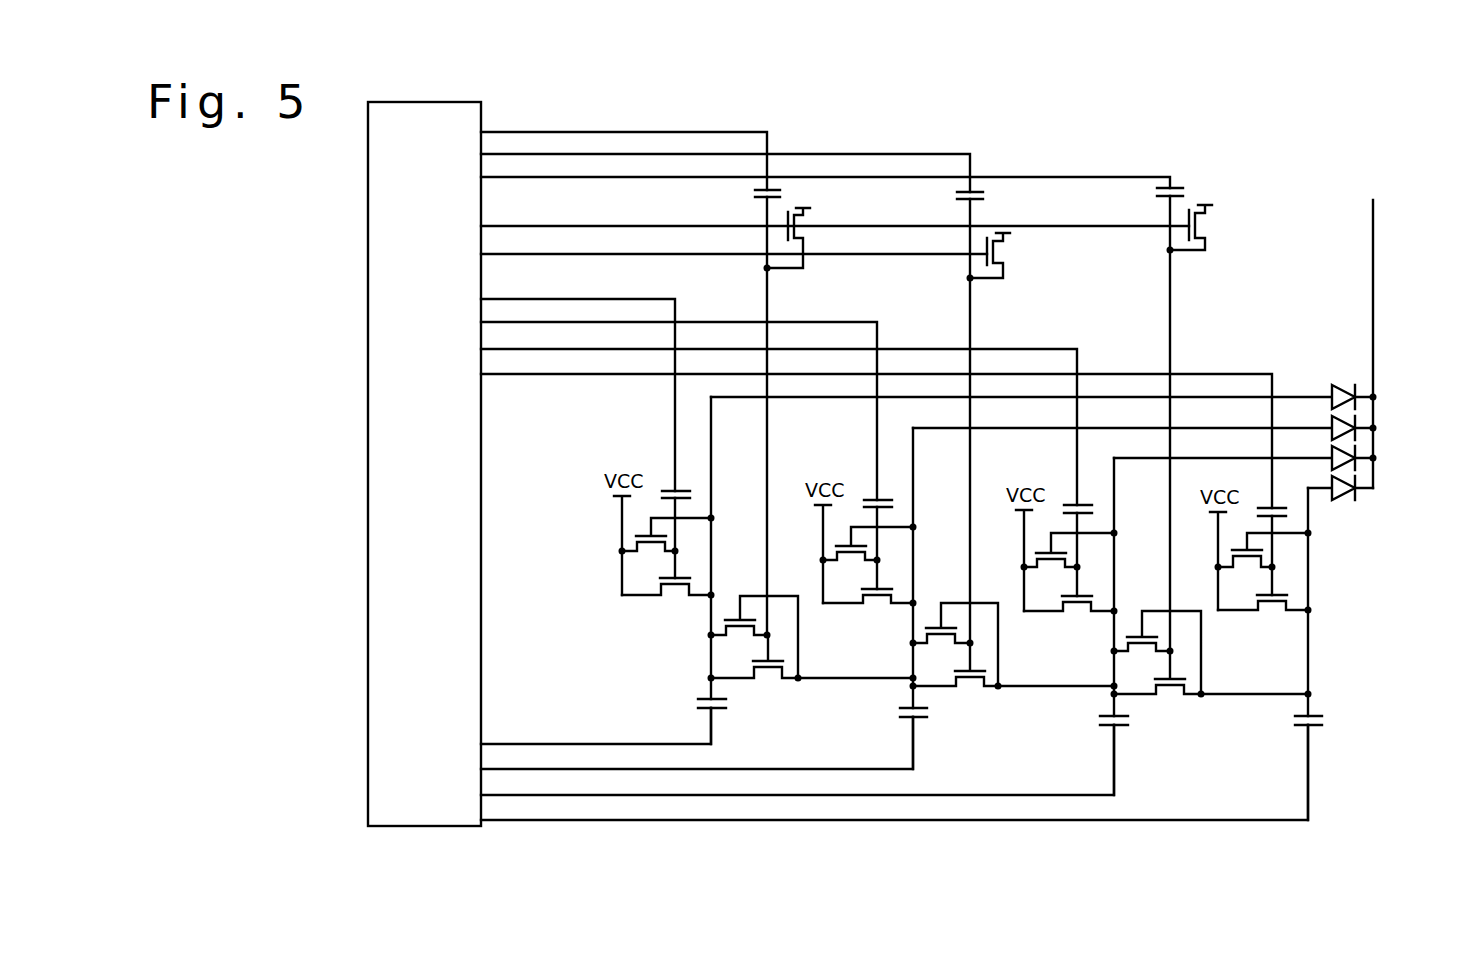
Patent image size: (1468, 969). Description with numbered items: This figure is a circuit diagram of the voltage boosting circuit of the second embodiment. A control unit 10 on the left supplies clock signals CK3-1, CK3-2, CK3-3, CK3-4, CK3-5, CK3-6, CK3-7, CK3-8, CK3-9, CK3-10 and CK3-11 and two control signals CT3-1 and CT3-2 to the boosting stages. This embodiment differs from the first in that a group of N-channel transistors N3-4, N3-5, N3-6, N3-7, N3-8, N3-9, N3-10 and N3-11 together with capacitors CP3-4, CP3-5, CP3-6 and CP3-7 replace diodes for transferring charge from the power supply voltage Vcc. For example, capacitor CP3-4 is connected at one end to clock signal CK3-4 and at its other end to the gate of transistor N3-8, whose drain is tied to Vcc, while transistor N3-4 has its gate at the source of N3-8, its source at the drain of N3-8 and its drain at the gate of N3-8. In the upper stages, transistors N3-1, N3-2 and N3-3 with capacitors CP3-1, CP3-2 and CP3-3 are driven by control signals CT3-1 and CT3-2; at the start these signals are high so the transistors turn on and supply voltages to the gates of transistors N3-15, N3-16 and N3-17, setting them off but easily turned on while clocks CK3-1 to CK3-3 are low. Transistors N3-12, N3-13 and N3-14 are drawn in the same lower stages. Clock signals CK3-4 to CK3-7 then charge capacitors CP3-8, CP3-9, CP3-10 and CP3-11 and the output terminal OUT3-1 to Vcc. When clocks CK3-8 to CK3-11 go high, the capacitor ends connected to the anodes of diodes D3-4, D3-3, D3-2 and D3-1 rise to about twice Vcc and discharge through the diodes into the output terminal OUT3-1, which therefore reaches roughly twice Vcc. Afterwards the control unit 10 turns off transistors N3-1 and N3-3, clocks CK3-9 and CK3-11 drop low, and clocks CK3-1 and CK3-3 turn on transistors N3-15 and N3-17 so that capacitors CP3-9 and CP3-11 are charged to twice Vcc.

The control unit 10 is at (368, 346).
The clock signal CK3-1 is at (624, 372).
The clock signal CK3-2 is at (725, 387).
The clock signal CK3-3 is at (825, 403).
The clock signal CK3-4 is at (578, 384).
The clock signal CK3-5 is at (679, 400).
The clock signal CK3-6 is at (779, 416).
The clock signal CK3-7 is at (876, 430).
The clock signal CK3-8 is at (596, 726).
The clock signal CK3-9 is at (697, 743).
The clock signal CK3-10 is at (797, 760).
The clock signal CK3-11 is at (894, 772).
The control signal CT3-1 is at (835, 215).
The control signal CT3-2 is at (734, 243).
The capacitor CP3-1 is at (731, 195).
The capacitor CP3-2 is at (935, 195).
The capacitor CP3-3 is at (1135, 195).
The capacitor CP3-4 is at (674, 492).
The capacitor CP3-5 is at (876, 500).
The capacitor CP3-6 is at (1078, 506).
The capacitor CP3-7 is at (1274, 510).
The capacitor CP3-8 is at (708, 710).
The capacitor CP3-9 is at (910, 720).
The capacitor CP3-10 is at (1110, 728).
The capacitor CP3-11 is at (1302, 728).
The N-channel transistor N3-1 is at (804, 232).
The N-channel transistor N3-2 is at (1005, 255).
The N-channel transistor N3-3 is at (1207, 223).
The N-channel transistor N3-4 is at (636, 546).
The N-channel transistor N3-5 is at (838, 555).
The N-channel transistor N3-6 is at (1038, 561).
The N-channel transistor N3-7 is at (1264, 558).
The N-channel transistor N3-8 is at (680, 592).
The N-channel transistor N3-9 is at (882, 600).
The N-channel transistor N3-10 is at (1082, 607).
The N-channel transistor N3-11 is at (1276, 606).
The N-channel transistor N3-12 is at (722, 632).
The N-channel transistor N3-13 is at (924, 640).
The N-channel transistor N3-14 is at (1124, 648).
The N-channel transistor N3-15 is at (765, 682).
The N-channel transistor N3-16 is at (967, 690).
The N-channel transistor N3-17 is at (1169, 697).
The diode D3-1 is at (1345, 473).
The diode D3-2 is at (1345, 443).
The diode D3-3 is at (1345, 413).
The diode D3-4 is at (1345, 383).
The output terminal OUT3-1 is at (1369, 331).